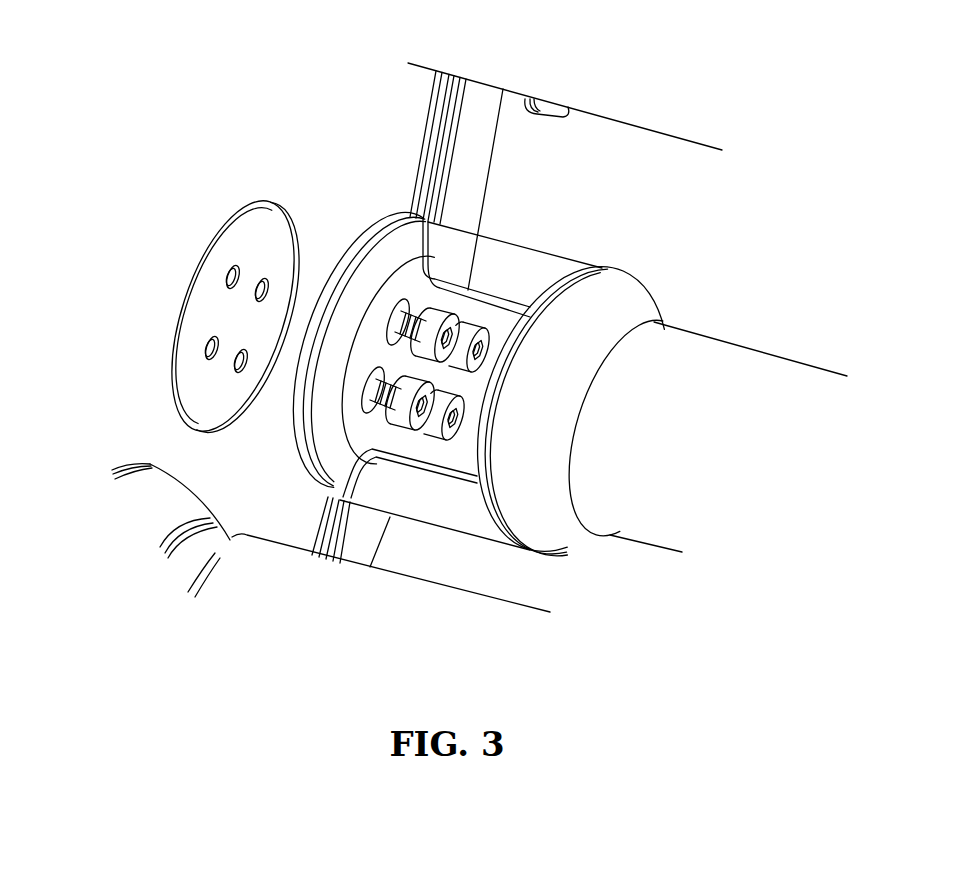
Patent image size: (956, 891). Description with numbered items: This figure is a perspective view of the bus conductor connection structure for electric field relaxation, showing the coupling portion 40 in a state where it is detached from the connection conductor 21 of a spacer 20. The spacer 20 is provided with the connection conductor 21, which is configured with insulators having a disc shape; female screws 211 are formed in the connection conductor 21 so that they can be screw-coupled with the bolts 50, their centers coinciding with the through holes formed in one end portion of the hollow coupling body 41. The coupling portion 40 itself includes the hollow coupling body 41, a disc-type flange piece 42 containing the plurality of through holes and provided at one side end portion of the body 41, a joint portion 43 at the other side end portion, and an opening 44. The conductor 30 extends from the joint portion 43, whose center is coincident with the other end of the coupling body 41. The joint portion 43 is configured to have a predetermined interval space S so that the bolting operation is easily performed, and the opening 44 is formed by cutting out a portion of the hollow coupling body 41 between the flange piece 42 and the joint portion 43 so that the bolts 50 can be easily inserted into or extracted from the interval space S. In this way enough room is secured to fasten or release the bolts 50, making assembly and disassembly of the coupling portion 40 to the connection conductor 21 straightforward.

The spacer 20 is at (273, 508).
The connection conductor 21 is at (213, 307).
The female screw 211 is at (208, 342).
The conductor 30 is at (762, 373).
The coupling portion 40 is at (533, 223).
The hollow coupling body 41 is at (377, 487).
The disc-type flange piece 42 is at (407, 283).
The joint portion 43 is at (623, 310).
The opening 44 is at (467, 265).
The bolt 50 is at (397, 450).
The interval space S is at (461, 451).